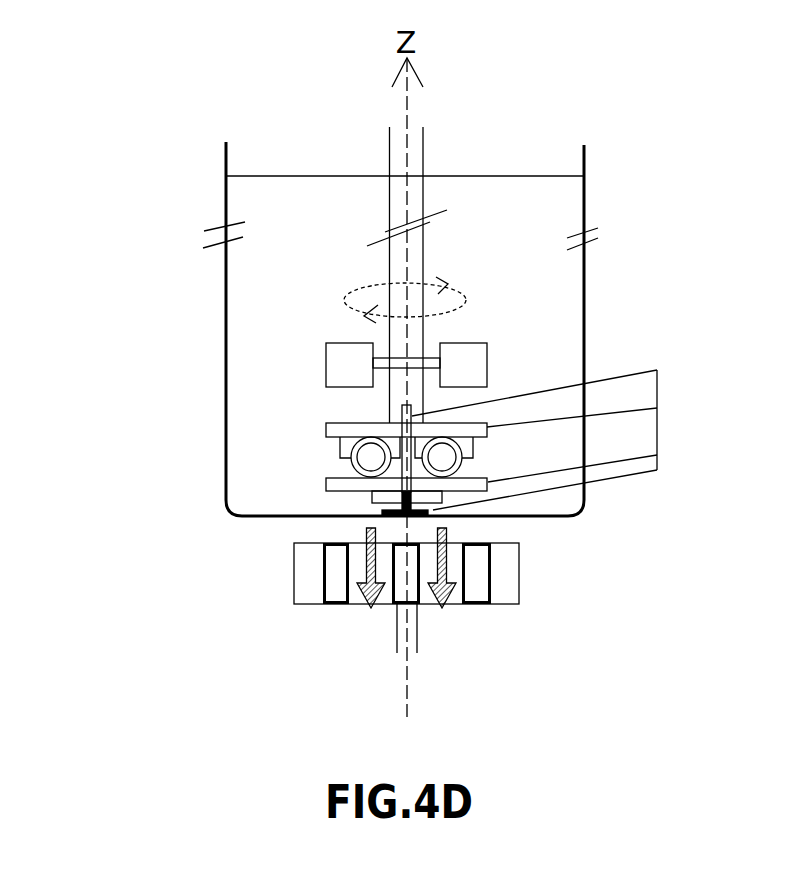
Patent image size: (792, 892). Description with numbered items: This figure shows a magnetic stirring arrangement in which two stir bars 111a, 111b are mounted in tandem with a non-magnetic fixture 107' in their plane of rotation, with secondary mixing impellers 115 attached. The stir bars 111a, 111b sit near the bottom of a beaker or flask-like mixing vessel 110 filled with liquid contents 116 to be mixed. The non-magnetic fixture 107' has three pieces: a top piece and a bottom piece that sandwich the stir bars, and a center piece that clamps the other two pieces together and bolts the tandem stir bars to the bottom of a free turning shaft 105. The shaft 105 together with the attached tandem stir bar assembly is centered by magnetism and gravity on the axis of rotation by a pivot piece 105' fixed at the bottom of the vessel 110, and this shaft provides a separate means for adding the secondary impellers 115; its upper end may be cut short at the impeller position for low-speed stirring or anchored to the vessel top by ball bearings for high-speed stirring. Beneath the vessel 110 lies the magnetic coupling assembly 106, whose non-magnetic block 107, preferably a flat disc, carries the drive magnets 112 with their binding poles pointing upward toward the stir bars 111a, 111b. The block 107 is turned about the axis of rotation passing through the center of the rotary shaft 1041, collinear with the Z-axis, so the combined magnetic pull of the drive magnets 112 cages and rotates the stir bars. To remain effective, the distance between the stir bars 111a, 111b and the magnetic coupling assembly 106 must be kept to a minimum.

The mixing vessel 110 is at (223, 152).
The liquid contents 116 is at (248, 407).
The shaft 105 is at (453, 275).
The impellers 115 is at (465, 357).
The non-magnetic fixture 107' is at (588, 431).
The stir bar 111a is at (350, 463).
The stir bar 111b is at (467, 458).
The pivot piece 105' is at (574, 480).
The non-magnetic block 107 is at (373, 602).
The magnetic coupling assembly 106 is at (520, 575).
The N-pole magnets 112 is at (322, 553).
The rotary shaft 1041 is at (417, 633).